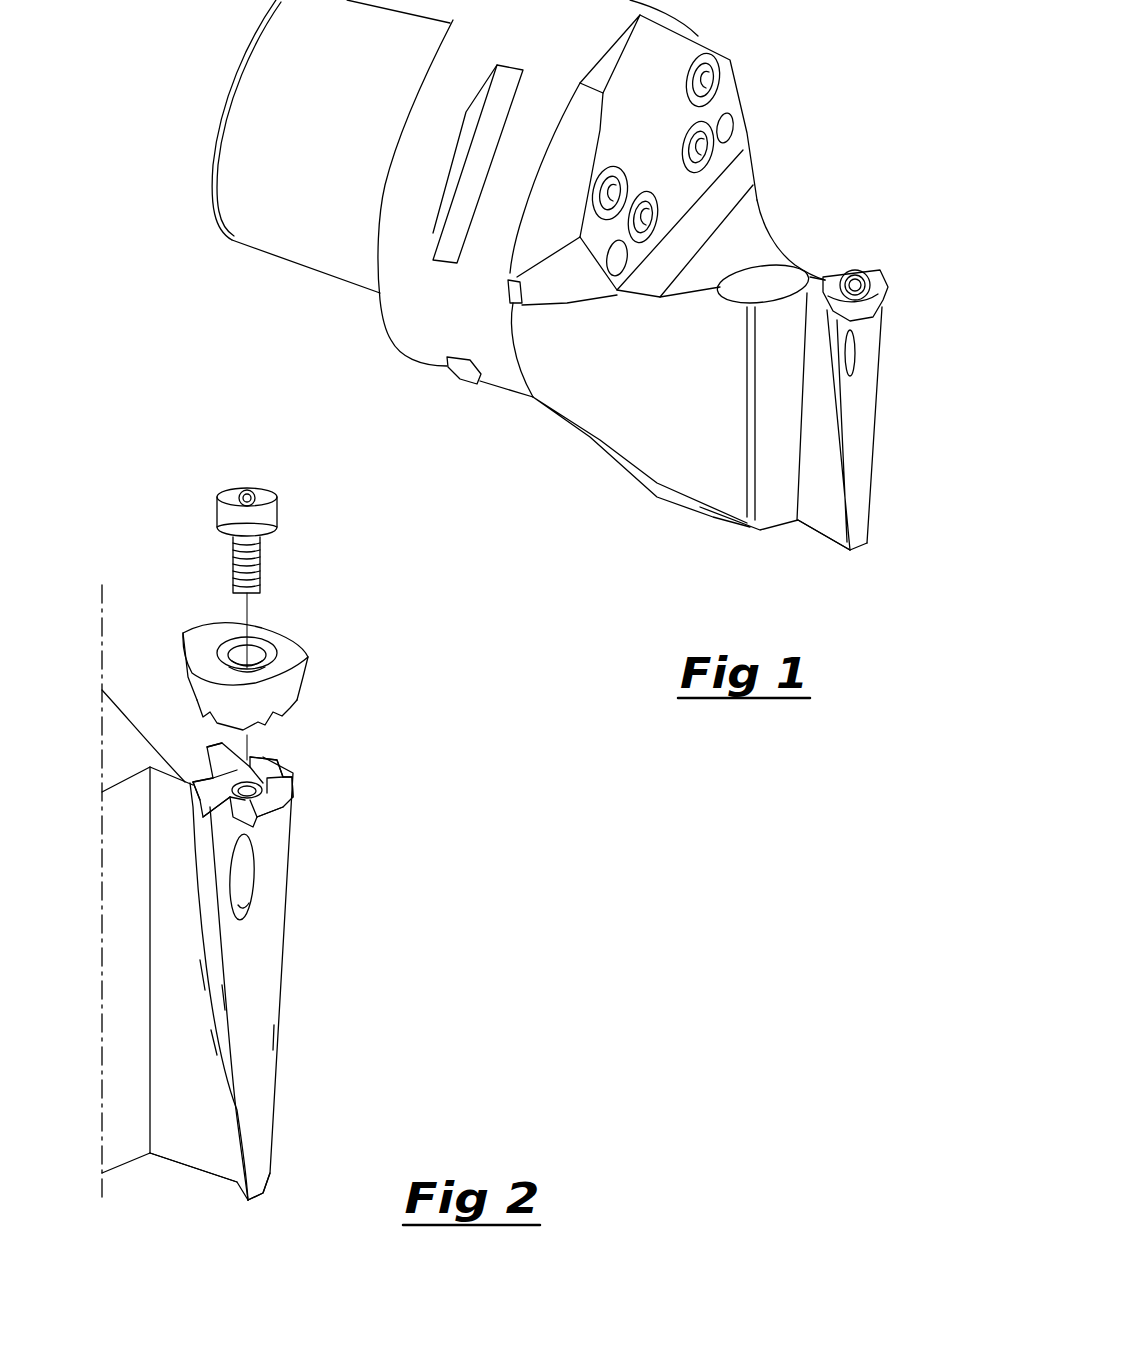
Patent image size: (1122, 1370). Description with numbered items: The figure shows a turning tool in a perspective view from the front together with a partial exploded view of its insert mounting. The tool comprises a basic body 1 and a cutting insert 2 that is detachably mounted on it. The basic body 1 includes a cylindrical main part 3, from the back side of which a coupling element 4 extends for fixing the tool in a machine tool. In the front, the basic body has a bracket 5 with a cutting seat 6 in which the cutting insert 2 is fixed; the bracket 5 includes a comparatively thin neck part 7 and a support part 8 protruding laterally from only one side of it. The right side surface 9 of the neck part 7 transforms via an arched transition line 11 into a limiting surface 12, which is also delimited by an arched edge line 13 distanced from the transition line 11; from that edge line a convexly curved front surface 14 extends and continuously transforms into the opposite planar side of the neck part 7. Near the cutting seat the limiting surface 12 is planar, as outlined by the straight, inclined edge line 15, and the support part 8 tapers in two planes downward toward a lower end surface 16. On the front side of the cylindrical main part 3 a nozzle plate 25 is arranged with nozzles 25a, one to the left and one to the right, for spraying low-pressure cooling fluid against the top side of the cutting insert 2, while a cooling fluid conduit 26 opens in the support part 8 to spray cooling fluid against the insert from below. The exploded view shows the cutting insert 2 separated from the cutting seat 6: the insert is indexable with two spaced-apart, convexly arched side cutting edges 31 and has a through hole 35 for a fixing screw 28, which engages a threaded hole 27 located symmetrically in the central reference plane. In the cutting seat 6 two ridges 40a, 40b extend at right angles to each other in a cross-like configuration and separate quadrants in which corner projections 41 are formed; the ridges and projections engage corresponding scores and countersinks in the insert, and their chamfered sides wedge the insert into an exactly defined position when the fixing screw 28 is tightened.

In FIG. 1, the basic body 1 is at (563, 448).
In FIG. 2, the basic body 1 is at (127, 690).
In FIG. 1, the cutting insert 2 is at (862, 262).
In FIG. 2, the cutting insert 2 is at (313, 650).
In FIG. 1, the cylindrical main part 3 is at (433, 360).
In FIG. 1, the coupling element 4 is at (263, 247).
In FIG. 1, the bracket 5 is at (820, 535).
In FIG. 2, the bracket 5 is at (172, 1170).
In FIG. 2, the cutting seat 6 is at (303, 793).
In FIG. 1, the neck part 7 is at (810, 277).
In FIG. 2, the neck part 7 is at (163, 753).
In FIG. 1, the support part 8 is at (847, 412).
In FIG. 2, the support part 8 is at (203, 900).
In FIG. 2, the side surface 9 is at (171, 960).
In FIG. 2, the transition line 11 is at (200, 970).
In FIG. 2, the limiting surface 12 is at (213, 1040).
In FIG. 2, the edge line 13 is at (223, 997).
In FIG. 2, the front surface 14 is at (273, 1037).
In FIG. 2, the edge line 15 is at (203, 803).
In FIG. 2, the lower end surface 16 is at (263, 1193).
In FIG. 1, the nozzle plate 25 is at (730, 77).
In FIG. 1, the nozzles 25a is at (730, 127).
In FIG. 1, the cooling fluid conduit 26 is at (857, 363).
In FIG. 2, the cooling fluid conduit 26 is at (243, 897).
In FIG. 2, the threaded hole 27 is at (270, 770).
In FIG. 2, the fixing screw 28 is at (287, 523).
In FIG. 2, the side cutting edges 31 is at (223, 623).
In FIG. 1, the through hole 35 is at (880, 302).
In FIG. 2, the through hole 35 is at (260, 650).
In FIG. 2, the ridge 40a is at (293, 780).
In FIG. 2, the ridge 40b is at (277, 810).
In FIG. 2, the corner projections 41 is at (263, 753).